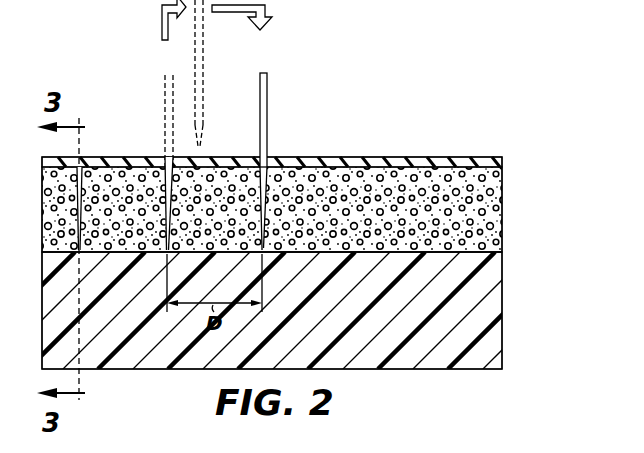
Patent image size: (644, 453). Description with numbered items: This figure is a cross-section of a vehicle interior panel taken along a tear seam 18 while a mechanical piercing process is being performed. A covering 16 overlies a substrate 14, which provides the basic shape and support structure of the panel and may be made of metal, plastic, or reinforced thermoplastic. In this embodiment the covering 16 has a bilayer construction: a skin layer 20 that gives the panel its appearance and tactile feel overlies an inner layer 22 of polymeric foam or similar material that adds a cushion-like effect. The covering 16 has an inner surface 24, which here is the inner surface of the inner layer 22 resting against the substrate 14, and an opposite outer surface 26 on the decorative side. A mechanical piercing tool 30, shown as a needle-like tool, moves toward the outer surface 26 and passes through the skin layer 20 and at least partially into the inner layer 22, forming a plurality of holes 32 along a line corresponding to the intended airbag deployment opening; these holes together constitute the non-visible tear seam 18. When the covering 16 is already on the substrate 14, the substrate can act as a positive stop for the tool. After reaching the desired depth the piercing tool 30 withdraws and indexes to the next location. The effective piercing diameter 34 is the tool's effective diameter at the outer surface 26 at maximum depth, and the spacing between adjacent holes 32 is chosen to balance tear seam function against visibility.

The substrate 14 is at (450, 370).
The covering 16 is at (464, 136).
The tear seam 18 is at (134, 242).
The skin layer 20 is at (352, 165).
The inner layer 22 is at (390, 170).
The inner surface 24 is at (348, 258).
The outer surface 26 is at (428, 160).
The mechanical piercing tool 30 is at (268, 75).
The holes 32 is at (163, 165).
The effective piercing diameter 34 is at (258, 157).